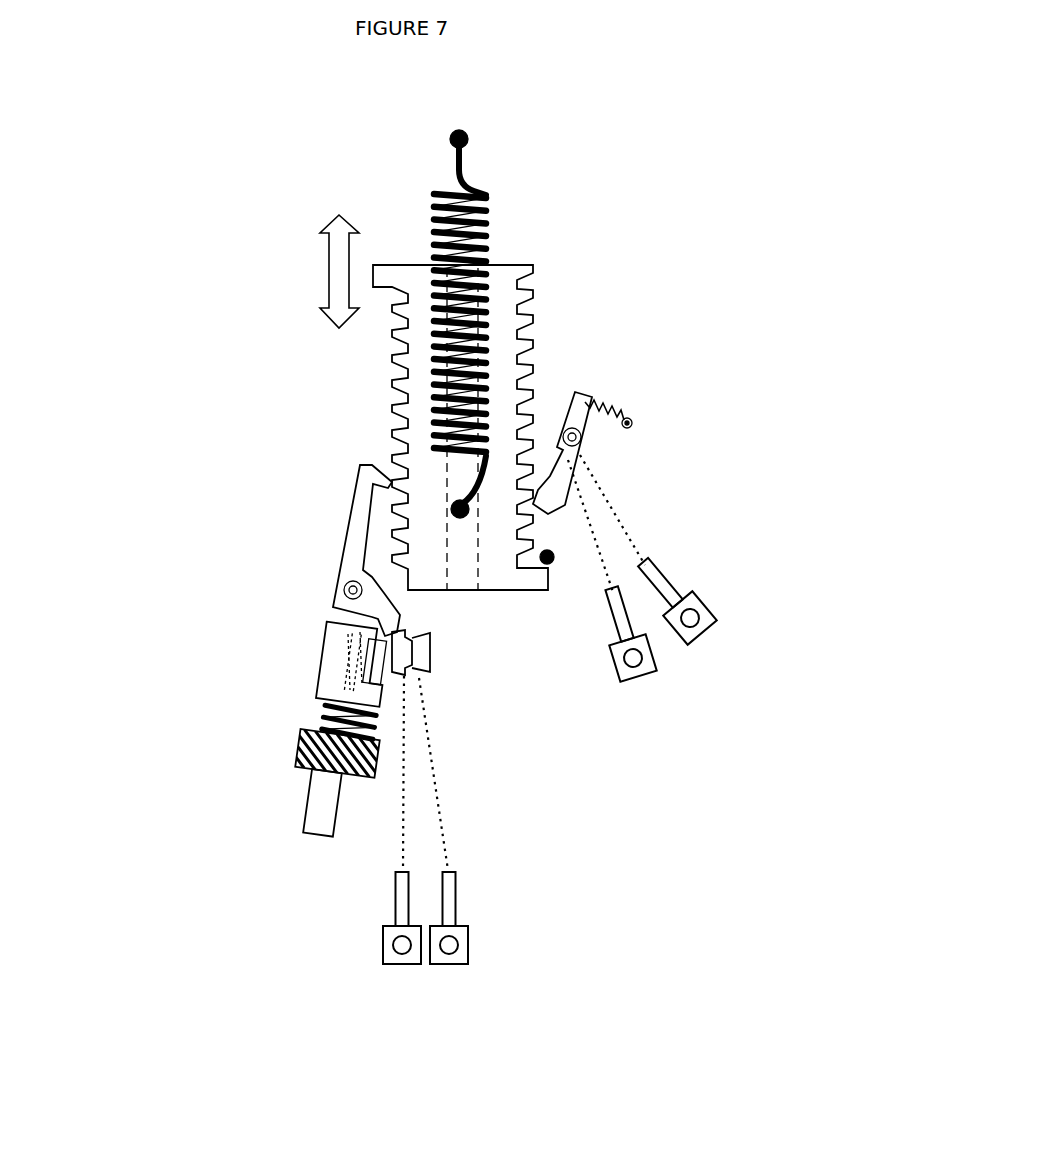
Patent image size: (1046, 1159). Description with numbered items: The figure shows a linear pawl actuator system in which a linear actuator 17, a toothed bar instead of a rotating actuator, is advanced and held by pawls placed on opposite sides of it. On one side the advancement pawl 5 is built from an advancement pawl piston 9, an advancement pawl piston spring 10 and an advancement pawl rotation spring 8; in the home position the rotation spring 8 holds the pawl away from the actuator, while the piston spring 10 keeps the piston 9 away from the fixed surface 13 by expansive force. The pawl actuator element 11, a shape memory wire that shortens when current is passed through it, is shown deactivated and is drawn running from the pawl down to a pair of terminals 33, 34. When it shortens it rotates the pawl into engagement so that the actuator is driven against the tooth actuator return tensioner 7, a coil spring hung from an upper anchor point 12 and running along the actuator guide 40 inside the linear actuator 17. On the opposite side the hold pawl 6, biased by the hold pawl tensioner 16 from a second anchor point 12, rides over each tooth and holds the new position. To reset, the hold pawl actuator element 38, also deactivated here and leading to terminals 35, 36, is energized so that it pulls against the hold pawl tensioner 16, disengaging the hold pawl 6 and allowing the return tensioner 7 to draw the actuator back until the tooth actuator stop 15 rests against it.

The advancement pawl 5 is at (358, 474).
The hold pawl 6 is at (582, 455).
The tooth actuator return tensioner 7 is at (490, 247).
The advancement pawl rotation spring 8 is at (337, 630).
The advancement pawl piston 9 is at (337, 683).
The advancement pawl piston spring 10 is at (330, 716).
The pawl actuator element 11 is at (436, 770).
The Anchor Point 12 is at (468, 139).
The fixed surface 13 is at (310, 747).
The tooth actuator stop 15 is at (553, 563).
The hold pawl tensioner 16 is at (586, 402).
The linear actuator 17 is at (393, 372).
The N1+ connector 33 is at (382, 938).
The N1- connector 34 is at (466, 960).
The N2+ connector 35 is at (617, 672).
The N2- connector 36 is at (716, 602).
The hold pawl actuator element 38 is at (627, 540).
The Actuator Guide 40 is at (464, 572).